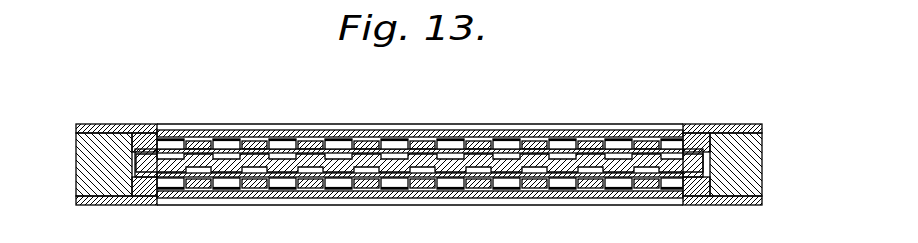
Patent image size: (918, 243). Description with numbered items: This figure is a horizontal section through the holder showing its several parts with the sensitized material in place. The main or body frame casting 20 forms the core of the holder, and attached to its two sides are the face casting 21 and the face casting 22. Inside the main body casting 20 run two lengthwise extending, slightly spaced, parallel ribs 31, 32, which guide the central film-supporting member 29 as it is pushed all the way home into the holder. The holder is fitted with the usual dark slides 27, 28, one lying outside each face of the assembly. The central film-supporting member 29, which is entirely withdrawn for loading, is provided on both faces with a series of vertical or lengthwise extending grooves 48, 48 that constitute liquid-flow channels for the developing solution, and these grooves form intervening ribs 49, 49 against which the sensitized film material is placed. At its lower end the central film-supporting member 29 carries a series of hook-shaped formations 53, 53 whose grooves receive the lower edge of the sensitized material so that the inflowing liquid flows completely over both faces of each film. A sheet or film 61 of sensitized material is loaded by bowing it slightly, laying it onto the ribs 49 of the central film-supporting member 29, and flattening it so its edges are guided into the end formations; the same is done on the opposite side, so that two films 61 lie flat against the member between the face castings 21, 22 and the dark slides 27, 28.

The main body casting 20 is at (87, 167).
The face casting 21 is at (121, 126).
The face casting 22 is at (118, 204).
The dark slide 27 is at (231, 132).
The dark slide 28 is at (230, 197).
The central film-supporting member 29 is at (383, 166).
The rib 31 is at (141, 140).
The rib 32 is at (145, 192).
The groove 48 is at (311, 150).
The rib 49 is at (283, 150).
The hook-shaped formation 53 is at (393, 143).
The film of sensitized material 61 is at (479, 150).